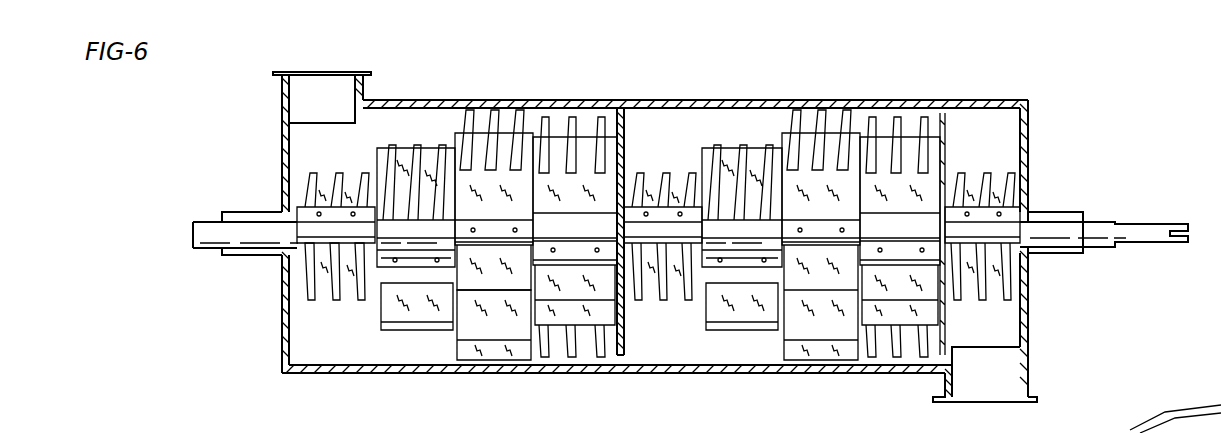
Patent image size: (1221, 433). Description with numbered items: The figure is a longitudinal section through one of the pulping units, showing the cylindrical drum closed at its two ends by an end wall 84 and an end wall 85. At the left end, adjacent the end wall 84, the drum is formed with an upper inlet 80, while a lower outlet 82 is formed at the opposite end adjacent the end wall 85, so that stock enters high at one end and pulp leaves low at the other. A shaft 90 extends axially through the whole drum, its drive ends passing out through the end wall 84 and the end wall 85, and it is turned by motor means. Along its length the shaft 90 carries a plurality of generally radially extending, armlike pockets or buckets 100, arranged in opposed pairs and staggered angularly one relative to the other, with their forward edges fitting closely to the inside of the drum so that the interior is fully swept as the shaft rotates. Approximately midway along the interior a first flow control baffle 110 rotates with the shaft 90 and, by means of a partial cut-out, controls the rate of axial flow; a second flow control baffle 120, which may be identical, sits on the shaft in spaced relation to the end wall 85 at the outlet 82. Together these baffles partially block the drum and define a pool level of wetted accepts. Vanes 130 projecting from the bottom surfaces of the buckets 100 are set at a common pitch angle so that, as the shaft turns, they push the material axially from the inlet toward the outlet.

The upper inlet 80 is at (335, 85).
The lower outlet 82 is at (1007, 373).
The end wall 84 is at (282, 153).
The end wall 85 is at (1030, 165).
The shaft 90 is at (213, 250).
The buckets 100 is at (455, 340).
The first flow control baffle 110 is at (623, 330).
The second flow control baffle 120 is at (945, 152).
The vanes 130 is at (340, 300).